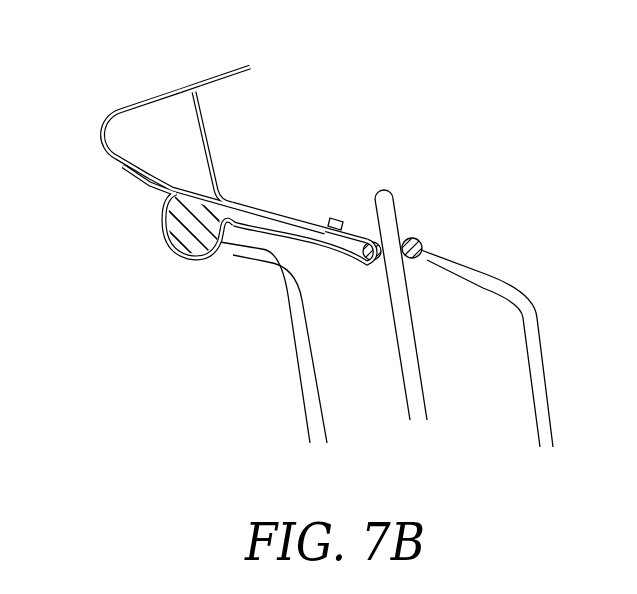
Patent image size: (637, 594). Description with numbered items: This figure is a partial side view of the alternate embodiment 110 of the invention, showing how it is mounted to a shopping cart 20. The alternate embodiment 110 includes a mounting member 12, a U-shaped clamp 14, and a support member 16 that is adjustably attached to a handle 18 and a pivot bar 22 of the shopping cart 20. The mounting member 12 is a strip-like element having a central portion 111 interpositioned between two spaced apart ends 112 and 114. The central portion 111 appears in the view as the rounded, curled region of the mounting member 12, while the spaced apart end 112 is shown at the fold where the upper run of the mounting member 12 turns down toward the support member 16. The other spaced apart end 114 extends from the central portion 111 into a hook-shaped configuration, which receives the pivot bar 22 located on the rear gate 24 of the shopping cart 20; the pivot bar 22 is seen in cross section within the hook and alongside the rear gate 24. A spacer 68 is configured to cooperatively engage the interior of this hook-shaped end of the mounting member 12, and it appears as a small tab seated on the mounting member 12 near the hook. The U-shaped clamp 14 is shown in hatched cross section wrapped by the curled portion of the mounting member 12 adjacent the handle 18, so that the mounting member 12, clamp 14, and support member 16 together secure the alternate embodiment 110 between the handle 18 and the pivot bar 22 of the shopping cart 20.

The alternate embodiment 110 is at (211, 170).
The mounting member 12 is at (149, 101).
The spaced apart end 112 is at (184, 84).
The support member 16 is at (194, 181).
The central portion 111 is at (112, 141).
The U-shaped clamp 14 is at (166, 245).
The handle 18 is at (199, 256).
The spacer 68 is at (331, 219).
The pivot bar 22 is at (367, 238).
The spaced apart end 114 is at (369, 268).
The rear gate 24 is at (408, 340).
The shopping cart 20 is at (273, 363).